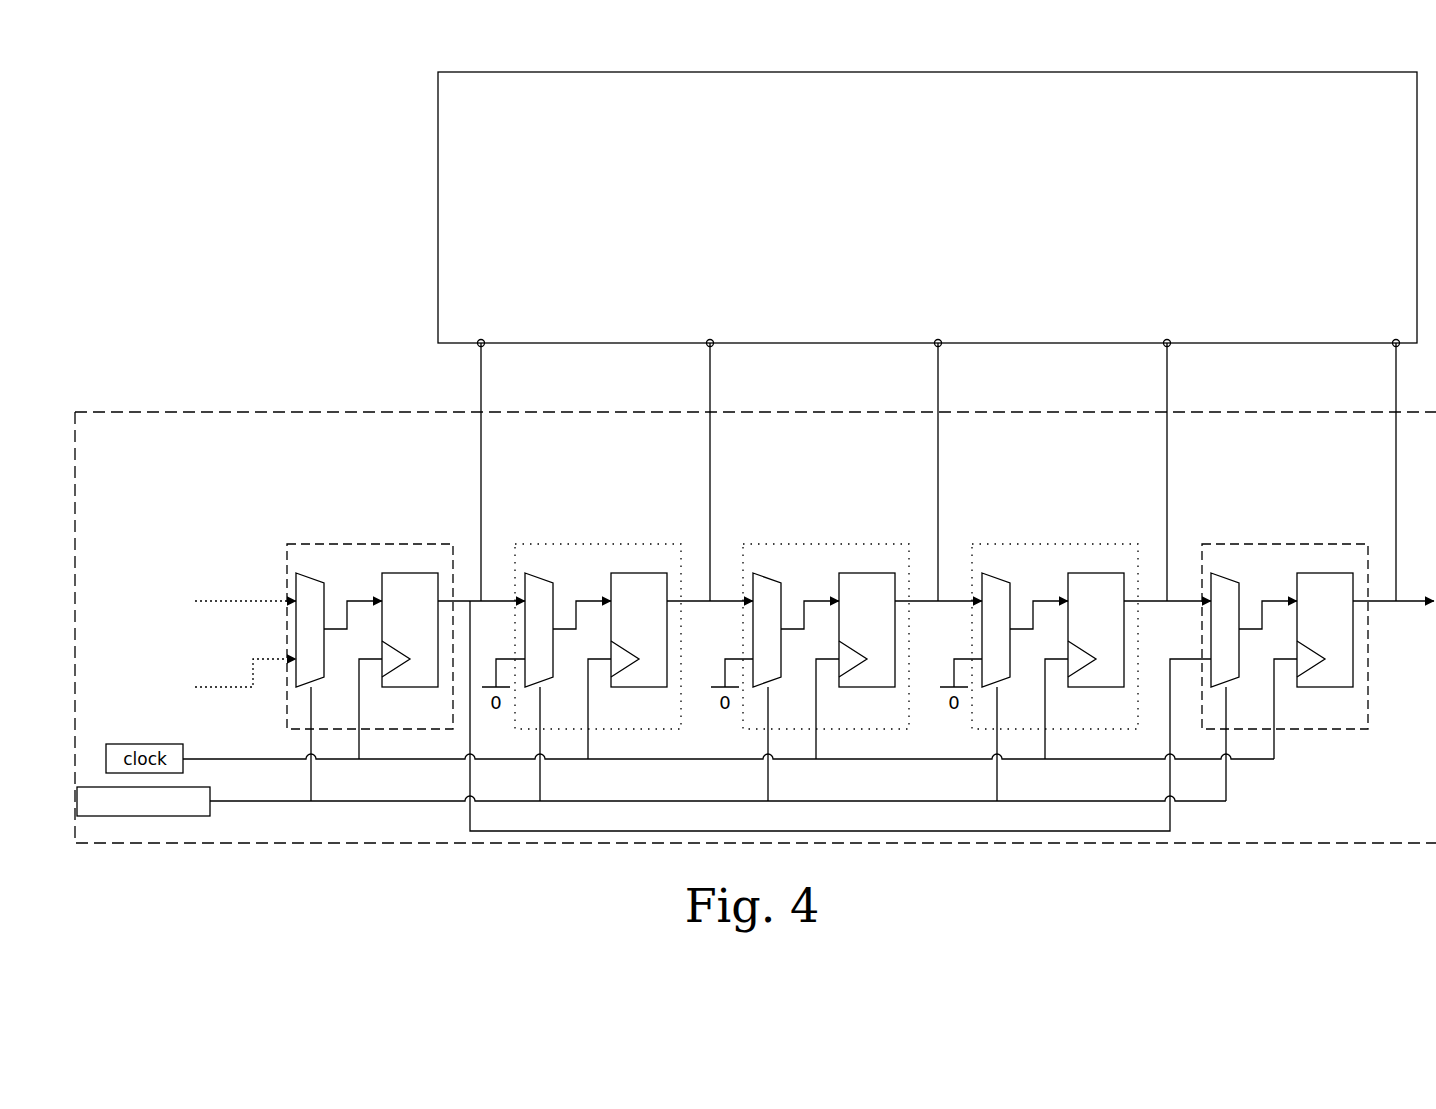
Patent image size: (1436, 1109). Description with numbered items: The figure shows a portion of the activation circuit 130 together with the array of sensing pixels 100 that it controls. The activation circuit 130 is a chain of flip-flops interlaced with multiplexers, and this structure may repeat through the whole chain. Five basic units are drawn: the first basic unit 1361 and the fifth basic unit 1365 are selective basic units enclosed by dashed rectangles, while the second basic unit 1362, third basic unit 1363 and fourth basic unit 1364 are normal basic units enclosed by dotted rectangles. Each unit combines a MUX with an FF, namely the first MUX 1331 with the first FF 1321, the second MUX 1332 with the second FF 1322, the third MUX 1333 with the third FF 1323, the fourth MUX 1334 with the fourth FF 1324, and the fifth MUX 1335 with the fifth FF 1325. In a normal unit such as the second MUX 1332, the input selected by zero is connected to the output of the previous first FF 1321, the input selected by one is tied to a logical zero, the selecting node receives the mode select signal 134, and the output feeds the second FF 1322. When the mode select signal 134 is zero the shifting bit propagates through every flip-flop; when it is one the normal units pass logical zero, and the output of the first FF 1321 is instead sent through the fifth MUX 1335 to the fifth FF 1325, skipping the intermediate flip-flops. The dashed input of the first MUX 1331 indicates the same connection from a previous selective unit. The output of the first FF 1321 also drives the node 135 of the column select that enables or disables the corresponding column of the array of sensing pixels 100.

The array of sensing pixels 100 is at (927, 209).
The activation circuit 130 is at (207, 464).
The mode select signal 134 is at (212, 805).
The node of the column select 135 is at (481, 445).
The first MUX 1331 is at (313, 582).
The second MUX 1332 is at (542, 582).
The third MUX 1333 is at (770, 582).
The fourth MUX 1334 is at (999, 582).
The fifth MUX 1335 is at (1228, 582).
The first basic unit 1361 is at (385, 560).
The second basic unit 1362 is at (615, 560).
The third basic unit 1363 is at (845, 560).
The fourth basic unit 1364 is at (1074, 560).
The fifth basic unit 1365 is at (1303, 560).
The first FF 1321 is at (417, 590).
The second FF 1322 is at (647, 590).
The third FF 1323 is at (877, 590).
The fourth FF 1324 is at (1106, 590).
The fifth FF 1325 is at (1334, 590).